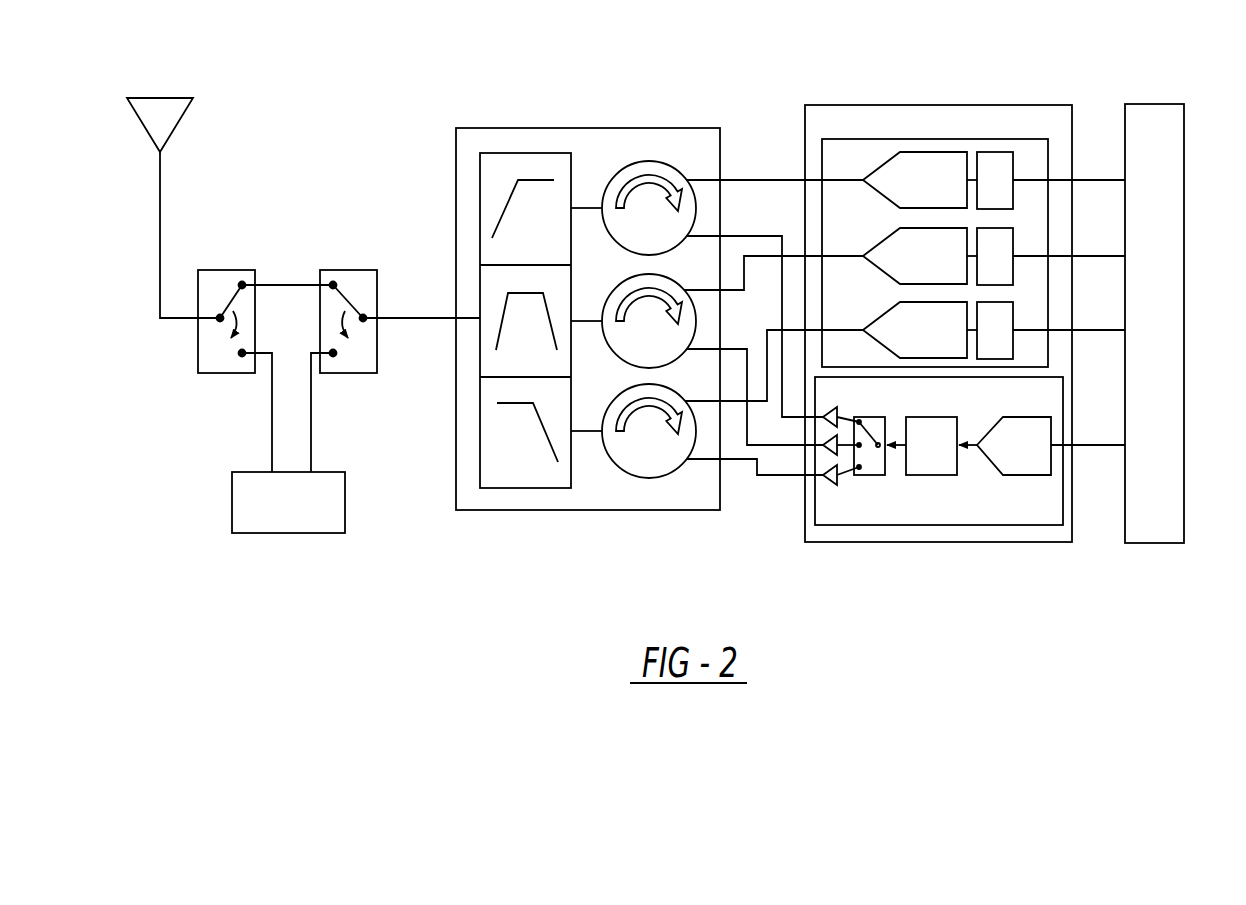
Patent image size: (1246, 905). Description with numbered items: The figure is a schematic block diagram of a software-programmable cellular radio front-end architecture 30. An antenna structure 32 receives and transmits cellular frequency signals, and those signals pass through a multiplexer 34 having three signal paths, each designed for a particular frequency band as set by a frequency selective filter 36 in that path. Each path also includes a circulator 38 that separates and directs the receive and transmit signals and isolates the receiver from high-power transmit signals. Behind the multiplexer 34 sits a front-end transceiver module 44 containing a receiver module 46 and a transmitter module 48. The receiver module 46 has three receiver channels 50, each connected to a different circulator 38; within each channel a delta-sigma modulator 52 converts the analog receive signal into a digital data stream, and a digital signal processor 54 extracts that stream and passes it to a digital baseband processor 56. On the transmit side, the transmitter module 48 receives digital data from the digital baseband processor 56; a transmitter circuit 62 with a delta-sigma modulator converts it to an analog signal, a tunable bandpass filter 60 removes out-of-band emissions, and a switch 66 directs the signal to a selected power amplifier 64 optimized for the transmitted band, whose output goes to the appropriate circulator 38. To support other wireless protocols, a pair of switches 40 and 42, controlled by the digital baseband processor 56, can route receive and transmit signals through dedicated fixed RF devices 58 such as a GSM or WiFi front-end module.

The cellular radio front-end architecture 30 is at (358, 103).
The antenna structure 32 is at (163, 97).
The multiplexer 34 is at (604, 126).
The frequency selective filter 36 is at (480, 327).
The circulator 38 is at (665, 476).
The switch 40 is at (224, 268).
The switch 42 is at (352, 268).
The front-end transceiver module 44 is at (915, 104).
The receiver module 46 is at (820, 150).
The transmitter module 48 is at (997, 528).
The receiver channel 50 is at (1024, 157).
The delta-sigma modulator 52 is at (886, 166).
The digital signal processor (DSP) 54 is at (995, 152).
The digital baseband processor (DBP) 56 is at (1184, 425).
The dedicated fixed RF devices 58 is at (232, 505).
The tunable bandpass filter (BPF) 60 is at (935, 476).
The transmitter circuit 62 is at (1040, 476).
The power amplifier 64 is at (830, 480).
The switch 66 is at (873, 476).